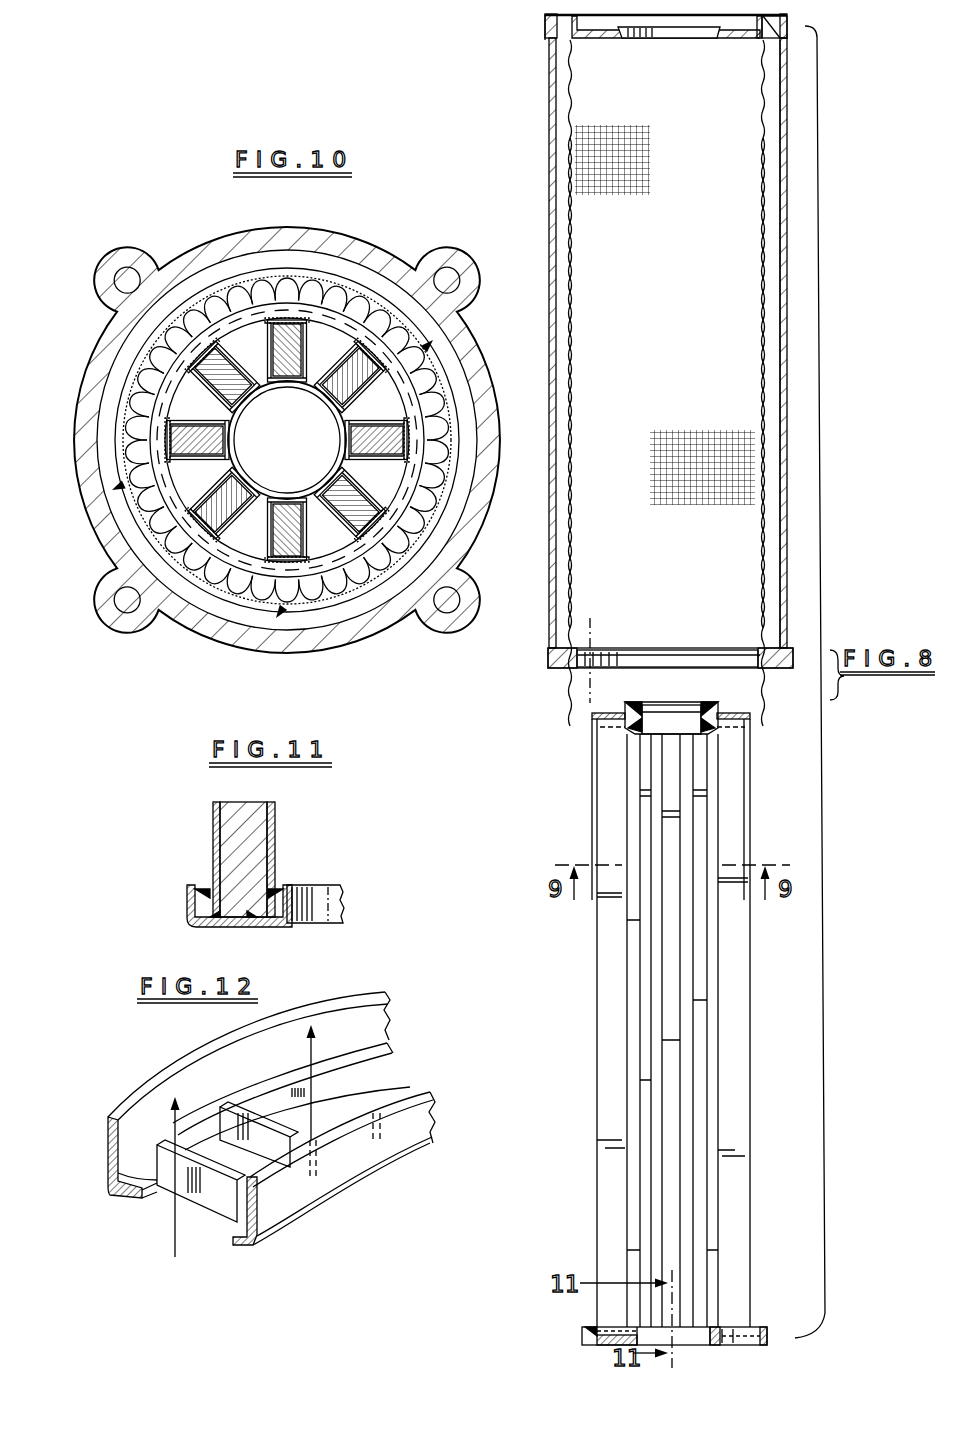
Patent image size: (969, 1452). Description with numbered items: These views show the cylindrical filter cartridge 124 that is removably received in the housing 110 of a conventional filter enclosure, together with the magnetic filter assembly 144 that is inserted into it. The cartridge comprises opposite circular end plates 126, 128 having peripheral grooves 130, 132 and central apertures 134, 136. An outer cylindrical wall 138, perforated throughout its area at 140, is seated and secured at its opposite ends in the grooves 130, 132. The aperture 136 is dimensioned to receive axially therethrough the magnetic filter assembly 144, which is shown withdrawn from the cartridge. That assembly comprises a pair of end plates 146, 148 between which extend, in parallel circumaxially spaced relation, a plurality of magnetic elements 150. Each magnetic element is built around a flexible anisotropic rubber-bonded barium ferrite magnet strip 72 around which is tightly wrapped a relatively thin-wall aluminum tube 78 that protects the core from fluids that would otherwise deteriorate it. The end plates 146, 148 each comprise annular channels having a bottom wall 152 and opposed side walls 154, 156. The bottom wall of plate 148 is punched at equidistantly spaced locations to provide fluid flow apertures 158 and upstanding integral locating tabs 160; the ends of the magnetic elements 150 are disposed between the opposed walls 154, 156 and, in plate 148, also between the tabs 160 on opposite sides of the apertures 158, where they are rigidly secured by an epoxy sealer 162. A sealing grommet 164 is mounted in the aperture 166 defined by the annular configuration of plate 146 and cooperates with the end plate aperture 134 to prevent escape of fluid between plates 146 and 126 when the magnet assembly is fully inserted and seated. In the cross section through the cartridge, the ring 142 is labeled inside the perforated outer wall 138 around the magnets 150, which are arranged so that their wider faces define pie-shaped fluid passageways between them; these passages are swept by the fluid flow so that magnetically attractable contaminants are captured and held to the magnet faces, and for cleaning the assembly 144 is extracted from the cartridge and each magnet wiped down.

In FIG. 11, the magnet strip 72 is at (260, 819).
In FIG. 11, the aluminum tube 78 is at (213, 836).
In FIG. 10, the housing 110 is at (255, 641).
In FIG. 8, the filter cartridge 124 is at (795, 357).
In FIG. 8, the end plate 126 is at (786, 14).
In FIG. 8, the end plate 128 is at (550, 668).
In FIG. 8, the peripheral groove 130 is at (798, 32).
In FIG. 8, the peripheral groove 132 is at (552, 656).
In FIG. 8, the central aperture 134 is at (714, 38).
In FIG. 10, the central aperture 136 is at (231, 558).
In FIG. 8, the central aperture 136 is at (659, 648).
In FIG. 10, the outer cylindrical wall 138 is at (216, 583).
In FIG. 8, the outer cylindrical wall 138 is at (785, 176).
In FIG. 10, the perforations 140 is at (325, 597).
In FIG. 8, the perforations 140 is at (783, 92).
In FIG. 10, the gear ring 142 is at (379, 316).
In FIG. 8, the magnetic filter assembly 144 is at (590, 1030).
In FIG. 8, the end plate 146 is at (598, 713).
In FIG. 8, the end plate 148 is at (703, 1335).
In FIG. 10, the magnetic elements 150 is at (309, 353).
In FIG. 8, the magnetic elements 150 is at (672, 842).
In FIG. 8, the bottom wall 152 is at (586, 1332).
In FIG. 12, the bottom wall 152 is at (135, 1195).
In FIG. 8, the side wall 154 is at (587, 1330).
In FIG. 11, the side wall 154 is at (187, 908).
In FIG. 12, the side wall 154 is at (146, 1100).
In FIG. 10, the side wall 156 is at (332, 416).
In FIG. 8, the side wall 156 is at (706, 1344).
In FIG. 11, the side wall 156 is at (326, 922).
In FIG. 12, the side wall 156 is at (407, 1137).
In FIG. 10, the fluid flow apertures 158 is at (247, 340).
In FIG. 8, the fluid flow apertures 158 is at (742, 1327).
In FIG. 12, the fluid flow apertures 158 is at (226, 1228).
In FIG. 10, the locating tabs 160 is at (196, 392).
In FIG. 8, the locating tabs 160 is at (736, 1327).
In FIG. 12, the locating tabs 160 is at (240, 1107).
In FIG. 10, the epoxy sealer 162 is at (402, 429).
In FIG. 8, the epoxy sealer 162 is at (588, 1326).
In FIG. 11, the epoxy sealer 162 is at (200, 887).
In FIG. 8, the sealing grommet 164 is at (712, 708).
In FIG. 8, the aperture 166 is at (645, 712).